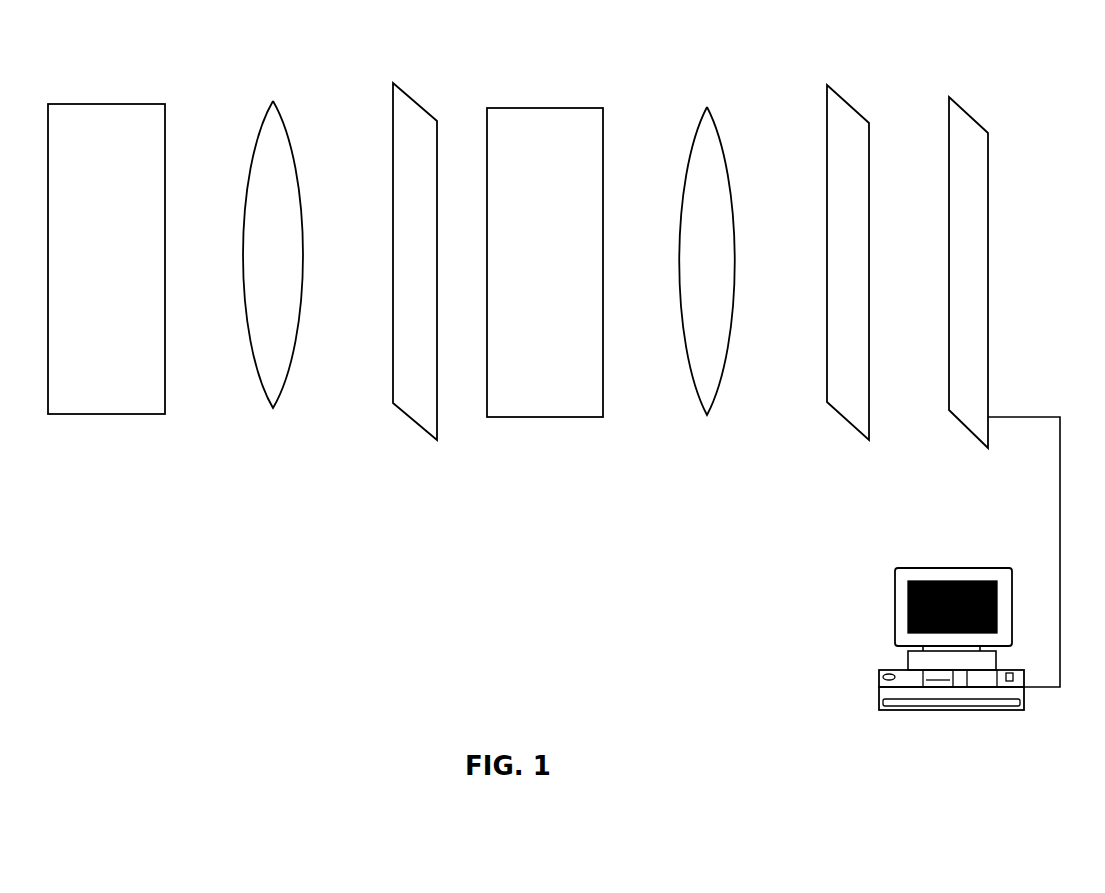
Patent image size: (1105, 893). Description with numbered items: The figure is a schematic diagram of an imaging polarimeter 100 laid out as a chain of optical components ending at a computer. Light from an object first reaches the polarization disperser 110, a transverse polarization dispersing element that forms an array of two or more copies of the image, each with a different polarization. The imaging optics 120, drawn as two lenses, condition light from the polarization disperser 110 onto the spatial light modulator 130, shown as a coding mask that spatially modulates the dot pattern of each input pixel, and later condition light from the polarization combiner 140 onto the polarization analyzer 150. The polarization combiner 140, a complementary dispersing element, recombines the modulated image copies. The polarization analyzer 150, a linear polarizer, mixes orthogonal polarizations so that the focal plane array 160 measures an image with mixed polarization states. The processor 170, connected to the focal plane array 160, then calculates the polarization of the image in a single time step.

The imaging polarimeter 100 is at (365, 600).
The polarization disperser 110 is at (95, 104).
The imaging optics 120 is at (278, 407).
The spatial light modulator 130 is at (405, 92).
The polarization combiner 140 is at (563, 417).
The polarization analyzer 150 is at (871, 423).
The focal plane array 160 is at (955, 100).
The processor 170 is at (879, 687).